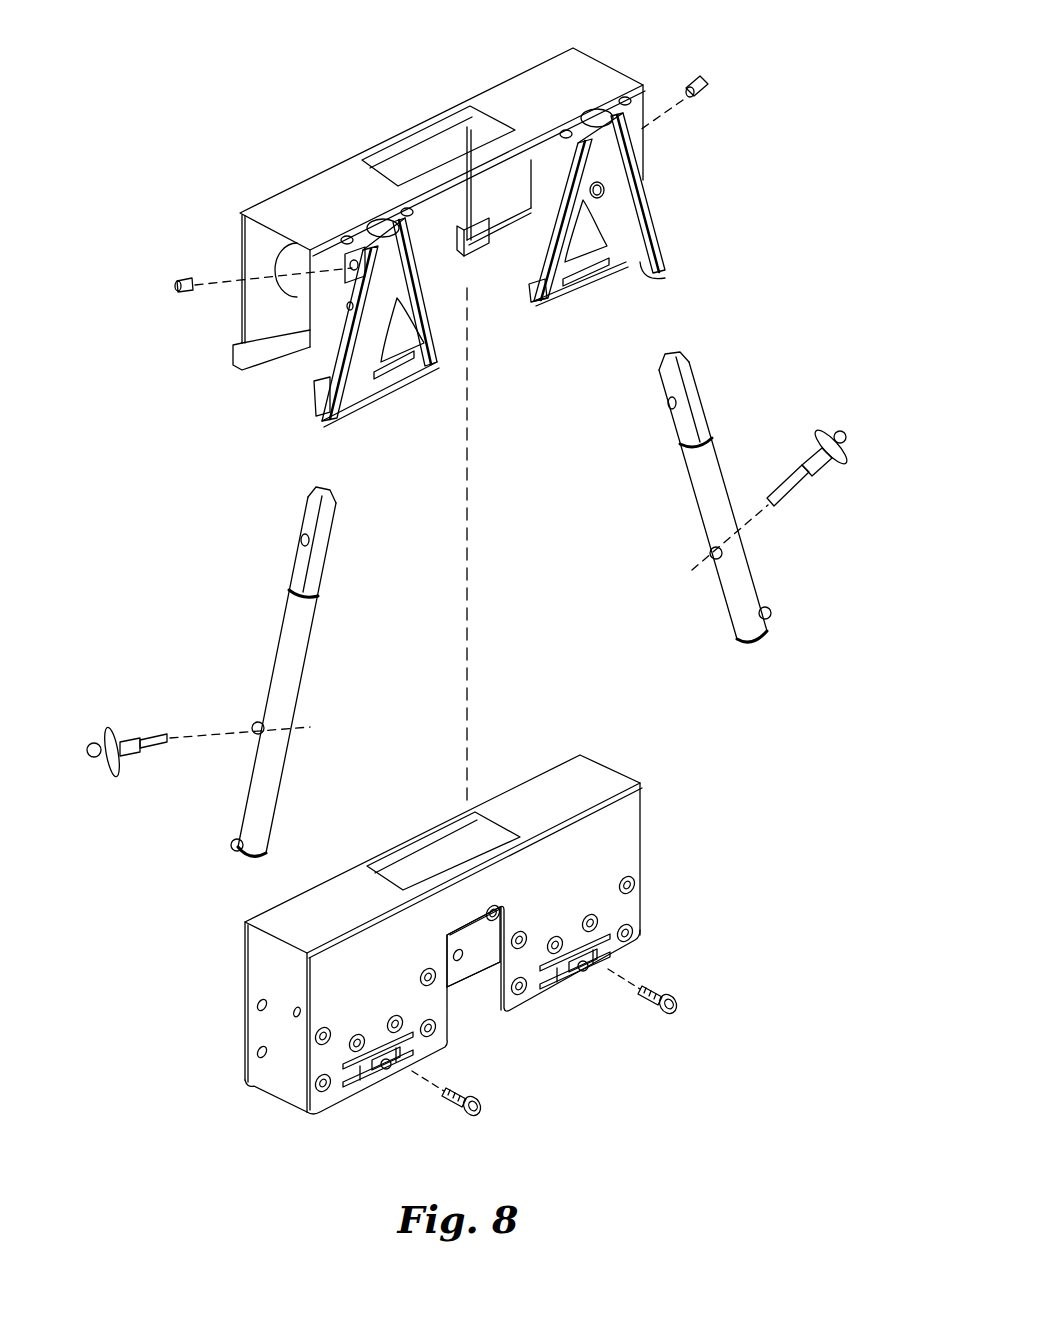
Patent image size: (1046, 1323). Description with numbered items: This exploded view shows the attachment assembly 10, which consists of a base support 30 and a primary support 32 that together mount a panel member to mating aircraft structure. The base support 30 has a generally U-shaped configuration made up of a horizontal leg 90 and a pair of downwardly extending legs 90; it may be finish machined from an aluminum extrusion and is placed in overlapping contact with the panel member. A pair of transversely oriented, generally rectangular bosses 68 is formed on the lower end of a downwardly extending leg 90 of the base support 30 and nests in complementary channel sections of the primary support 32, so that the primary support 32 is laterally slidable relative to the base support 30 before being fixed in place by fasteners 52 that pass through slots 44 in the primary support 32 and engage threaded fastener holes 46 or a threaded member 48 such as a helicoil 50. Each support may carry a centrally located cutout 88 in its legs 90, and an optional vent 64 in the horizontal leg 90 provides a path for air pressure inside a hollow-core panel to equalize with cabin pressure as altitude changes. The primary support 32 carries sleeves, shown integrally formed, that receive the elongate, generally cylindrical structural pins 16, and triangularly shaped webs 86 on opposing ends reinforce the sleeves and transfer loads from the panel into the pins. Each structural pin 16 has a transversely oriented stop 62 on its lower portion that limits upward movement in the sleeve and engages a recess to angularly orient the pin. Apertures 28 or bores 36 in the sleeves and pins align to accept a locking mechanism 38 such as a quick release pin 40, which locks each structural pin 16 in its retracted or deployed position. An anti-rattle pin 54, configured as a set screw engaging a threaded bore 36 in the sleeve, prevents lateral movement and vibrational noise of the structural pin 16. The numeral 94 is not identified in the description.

The attachment assembly 10 is at (270, 122).
The structural pin 16 is at (758, 365).
The aperture 28 is at (458, 445).
The bore 36 is at (347, 312).
The base support 30 is at (655, 752).
The primary support 32 is at (695, 205).
The locking mechanism 38 is at (463, 625).
The quick release pin 40 is at (830, 470).
The slot 44 is at (388, 370).
The threaded fastener hole 46 is at (593, 922).
The threaded member 48 is at (498, 1015).
The helicoil 50 is at (583, 972).
The fastener 52 is at (476, 1114).
The anti-rattle pin 54 is at (692, 78).
The stop 62 is at (232, 848).
The vent 64 is at (415, 148).
The boss 68 is at (605, 955).
The web 86 is at (420, 328).
The cutout 88 is at (482, 252).
The leg 90 is at (252, 988).
The tab 94 is at (318, 405).